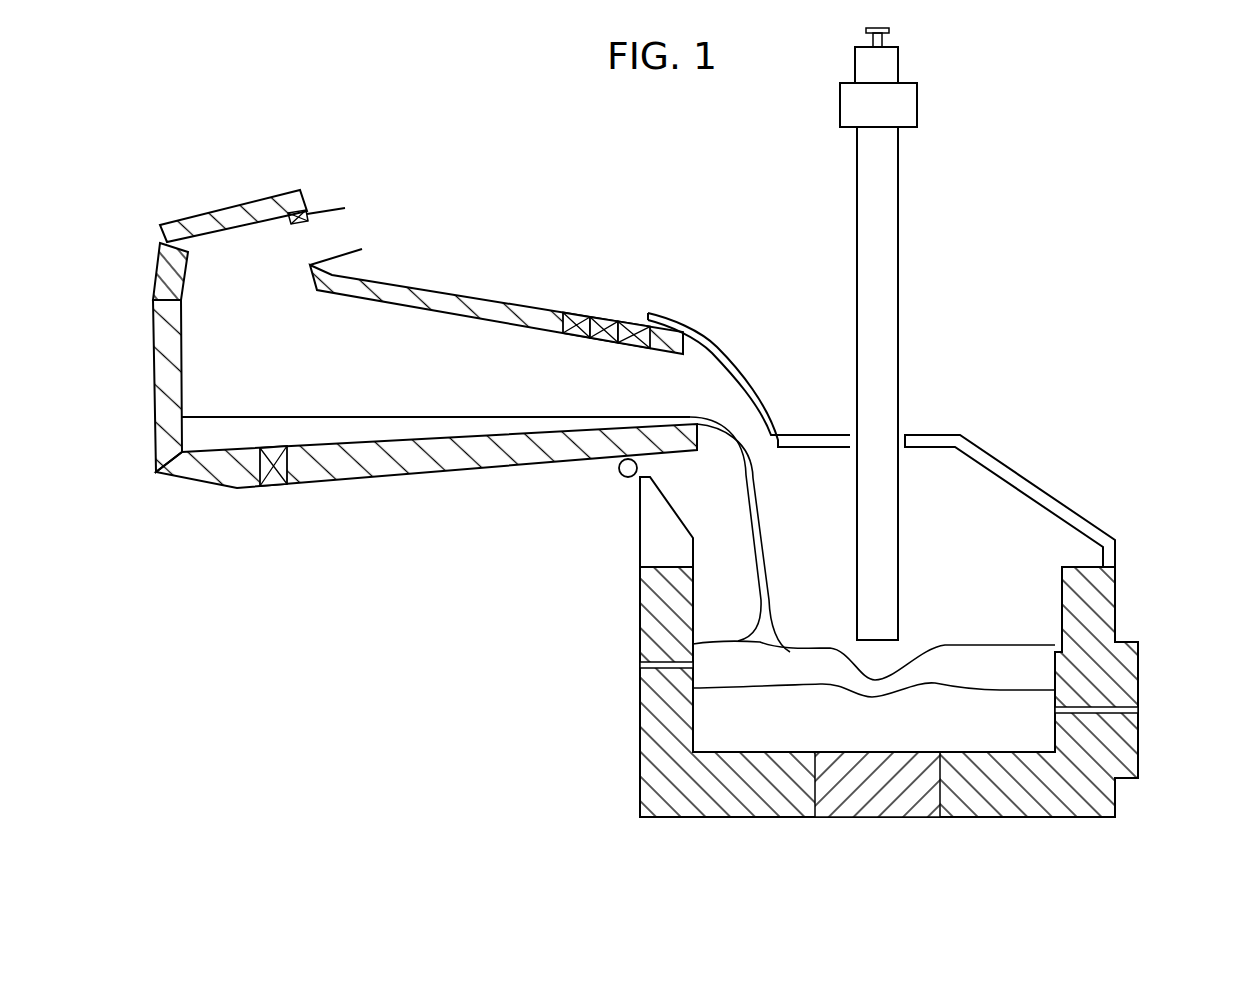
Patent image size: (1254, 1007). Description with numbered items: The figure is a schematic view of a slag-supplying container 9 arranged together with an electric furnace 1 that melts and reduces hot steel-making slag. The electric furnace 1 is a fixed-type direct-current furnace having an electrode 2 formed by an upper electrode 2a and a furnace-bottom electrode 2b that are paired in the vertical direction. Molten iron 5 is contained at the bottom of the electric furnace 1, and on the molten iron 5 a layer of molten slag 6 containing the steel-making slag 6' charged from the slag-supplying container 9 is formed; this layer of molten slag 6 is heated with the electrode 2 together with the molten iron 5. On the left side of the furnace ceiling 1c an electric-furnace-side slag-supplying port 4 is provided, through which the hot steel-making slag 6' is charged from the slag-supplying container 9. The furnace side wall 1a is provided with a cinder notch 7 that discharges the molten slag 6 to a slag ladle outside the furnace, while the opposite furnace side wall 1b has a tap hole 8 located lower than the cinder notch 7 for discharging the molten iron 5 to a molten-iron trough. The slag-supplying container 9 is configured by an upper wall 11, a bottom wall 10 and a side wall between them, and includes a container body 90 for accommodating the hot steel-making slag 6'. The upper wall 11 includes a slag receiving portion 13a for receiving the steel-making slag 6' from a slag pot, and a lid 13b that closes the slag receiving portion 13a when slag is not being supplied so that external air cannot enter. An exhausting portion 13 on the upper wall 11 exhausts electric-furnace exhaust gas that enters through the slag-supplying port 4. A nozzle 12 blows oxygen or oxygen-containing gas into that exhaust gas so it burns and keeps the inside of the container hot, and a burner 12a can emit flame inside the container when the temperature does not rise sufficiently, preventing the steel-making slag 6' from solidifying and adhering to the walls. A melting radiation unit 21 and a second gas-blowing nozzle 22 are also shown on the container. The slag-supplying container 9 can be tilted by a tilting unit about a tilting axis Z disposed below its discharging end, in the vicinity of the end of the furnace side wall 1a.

The electric furnace 1 is at (883, 621).
The furnace side wall 1a is at (668, 683).
The furnace side wall 1b is at (1130, 660).
The furnace ceiling 1c is at (1058, 503).
The electrode 2 is at (923, 334).
The upper electrode 2a is at (887, 183).
The furnace-bottom electrode 2b is at (853, 803).
The electric-furnace-side slag-supplying port 4 is at (722, 383).
The molten iron 5 is at (703, 726).
The molten slag 6 is at (822, 548).
The steel-making slag 6' is at (314, 496).
The cinder notch 7 is at (718, 668).
The tap hole 8 is at (1138, 710).
The slag-supplying container 9 is at (496, 275).
The container body 90 is at (422, 270).
The bottom wall 10 is at (210, 470).
The upper wall 11 is at (466, 302).
The nozzle 12 is at (636, 329).
The burner 12a is at (610, 325).
The exhausting portion 13 is at (342, 237).
The slag receiving portion 13a is at (256, 186).
The lid 13b is at (197, 225).
The melting radiation unit 21 is at (577, 319).
The second gas-blowing nozzle 22 is at (272, 490).
The tilting axis Z is at (620, 474).